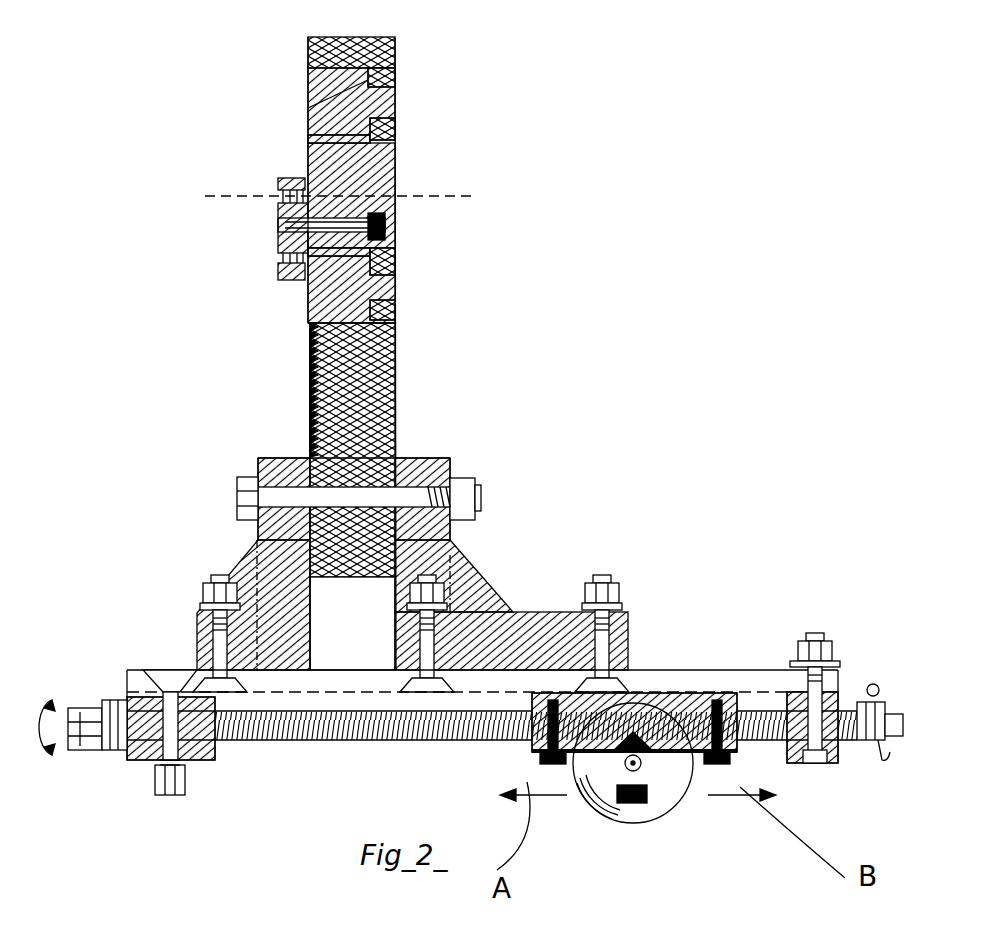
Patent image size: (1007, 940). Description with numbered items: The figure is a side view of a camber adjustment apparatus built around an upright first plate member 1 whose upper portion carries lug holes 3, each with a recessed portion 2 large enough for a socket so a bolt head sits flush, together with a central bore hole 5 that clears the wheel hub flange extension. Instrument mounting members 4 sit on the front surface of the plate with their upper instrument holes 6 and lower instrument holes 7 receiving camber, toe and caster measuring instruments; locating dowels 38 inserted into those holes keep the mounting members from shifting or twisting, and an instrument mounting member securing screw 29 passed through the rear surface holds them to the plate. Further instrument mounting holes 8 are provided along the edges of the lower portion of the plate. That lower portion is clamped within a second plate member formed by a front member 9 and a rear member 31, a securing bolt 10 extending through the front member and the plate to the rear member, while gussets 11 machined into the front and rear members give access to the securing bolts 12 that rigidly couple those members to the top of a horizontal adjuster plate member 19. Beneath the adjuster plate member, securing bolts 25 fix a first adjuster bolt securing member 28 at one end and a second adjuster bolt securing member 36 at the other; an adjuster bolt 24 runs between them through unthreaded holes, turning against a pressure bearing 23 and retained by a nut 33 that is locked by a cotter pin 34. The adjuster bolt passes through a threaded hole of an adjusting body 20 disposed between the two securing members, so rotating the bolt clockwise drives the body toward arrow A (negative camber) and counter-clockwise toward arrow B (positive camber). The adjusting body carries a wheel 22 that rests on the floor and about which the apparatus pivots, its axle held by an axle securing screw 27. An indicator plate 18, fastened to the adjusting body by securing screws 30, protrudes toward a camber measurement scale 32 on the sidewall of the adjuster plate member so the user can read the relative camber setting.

The first plate member 1 is at (384, 52).
The recessed portion 2 is at (310, 107).
The lug holes 3 is at (385, 107).
The instrument mounting members 4 is at (285, 213).
The bore hole 5 is at (373, 180).
The upper instrument holes 6 is at (285, 197).
The lower instrument holes 7 is at (283, 257).
The instrument mounting holes 8 is at (310, 340).
The front member 9 is at (278, 470).
The securing bolt 10 is at (405, 497).
The gussets 11 is at (248, 537).
The securing bolts 12 is at (213, 640).
The indicator plate 18 is at (530, 745).
The adjuster plate member 19 is at (767, 705).
The adjusting body 20 is at (703, 690).
The wheel 22 is at (657, 813).
The pressure bearing 23 is at (110, 712).
The adjuster bolt 24 is at (322, 745).
The securing bolts 25 is at (168, 690).
The axle securing screw 27 is at (647, 795).
The first adjuster bolt securing member 28 is at (205, 757).
The instrument mounting member securing screw 29 is at (393, 218).
The securing screws 30 is at (537, 787).
The rear member 31 is at (533, 630).
The camber measurement scale 32 is at (440, 745).
The nut 33 is at (873, 693).
The cotter pin 34 is at (884, 755).
The second adjuster bolt securing member 36 is at (780, 747).
The locating dowels 38 is at (320, 183).